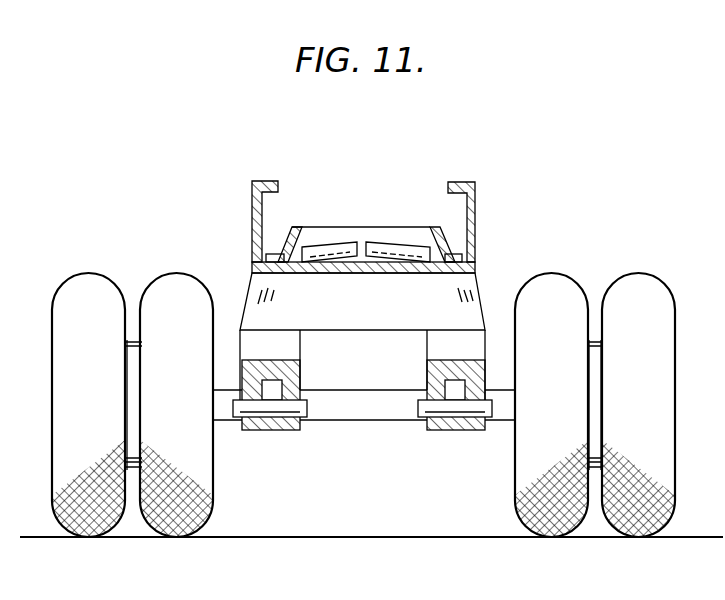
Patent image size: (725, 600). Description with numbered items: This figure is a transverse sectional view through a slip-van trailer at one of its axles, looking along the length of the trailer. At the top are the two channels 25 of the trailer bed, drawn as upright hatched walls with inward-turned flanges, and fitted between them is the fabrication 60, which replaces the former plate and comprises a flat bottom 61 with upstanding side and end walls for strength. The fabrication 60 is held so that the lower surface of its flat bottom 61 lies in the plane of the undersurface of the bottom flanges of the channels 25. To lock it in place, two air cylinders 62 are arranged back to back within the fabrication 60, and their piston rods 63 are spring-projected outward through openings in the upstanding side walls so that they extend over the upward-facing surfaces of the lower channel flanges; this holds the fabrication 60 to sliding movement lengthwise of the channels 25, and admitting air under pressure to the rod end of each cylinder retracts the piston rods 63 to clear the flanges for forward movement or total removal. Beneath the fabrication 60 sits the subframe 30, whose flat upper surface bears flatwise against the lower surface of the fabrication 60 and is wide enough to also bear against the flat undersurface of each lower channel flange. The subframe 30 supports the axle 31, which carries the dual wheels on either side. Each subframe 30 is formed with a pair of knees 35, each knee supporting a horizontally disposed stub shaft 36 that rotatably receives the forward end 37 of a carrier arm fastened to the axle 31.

The channels 25 is at (252, 190).
The subframe 30 is at (484, 283).
The axle 31 is at (370, 396).
The knees 35 is at (255, 432).
The stub shaft 36 is at (300, 421).
The forward end of arm 37 is at (272, 432).
The fabrication 60 is at (401, 221).
The flat bottom 61 is at (328, 270).
The air cylinders 62 is at (380, 247).
The piston rods 63 is at (285, 250).